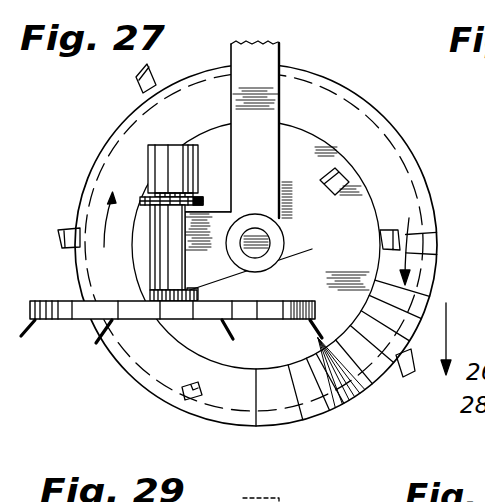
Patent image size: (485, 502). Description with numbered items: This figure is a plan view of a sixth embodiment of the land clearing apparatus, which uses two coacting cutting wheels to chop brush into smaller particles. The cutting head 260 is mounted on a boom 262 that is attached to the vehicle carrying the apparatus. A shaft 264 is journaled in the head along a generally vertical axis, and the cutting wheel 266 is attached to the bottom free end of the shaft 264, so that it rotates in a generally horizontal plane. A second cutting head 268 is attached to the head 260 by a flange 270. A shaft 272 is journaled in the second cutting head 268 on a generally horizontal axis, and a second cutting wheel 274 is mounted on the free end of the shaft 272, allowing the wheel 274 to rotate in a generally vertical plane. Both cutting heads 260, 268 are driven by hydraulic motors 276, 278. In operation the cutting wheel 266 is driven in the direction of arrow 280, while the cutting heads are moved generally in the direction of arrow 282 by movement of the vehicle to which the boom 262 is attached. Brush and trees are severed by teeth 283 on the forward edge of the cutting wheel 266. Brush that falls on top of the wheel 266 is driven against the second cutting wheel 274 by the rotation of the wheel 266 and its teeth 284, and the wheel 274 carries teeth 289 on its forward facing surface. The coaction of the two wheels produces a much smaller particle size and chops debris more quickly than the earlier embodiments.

The cutting head 260 is at (299, 158).
The boom 262 is at (279, 65).
The shaft 264 is at (256, 228).
The cutting wheel 266 is at (360, 187).
The second cutting head 268 is at (150, 265).
The flange 270 is at (212, 219).
The shaft 272 is at (205, 298).
The second cutting wheel 274 is at (140, 314).
The hydraulic motor 276 is at (286, 254).
The hydraulic motor 278 is at (170, 168).
The arrow 280 is at (437, 233).
The arrow 282 is at (448, 325).
The teeth 283 is at (403, 377).
The teeth 284 is at (194, 386).
The teeth 289 is at (322, 336).